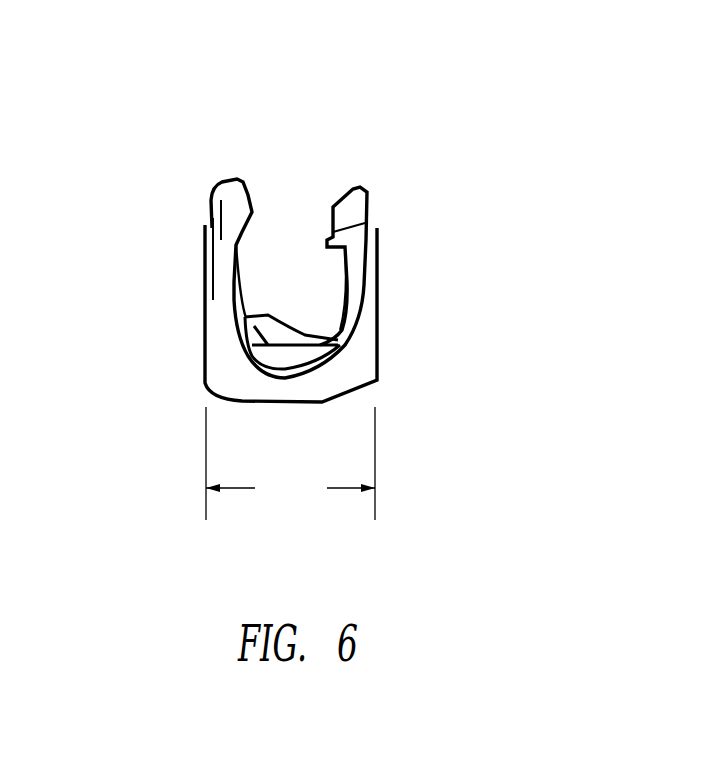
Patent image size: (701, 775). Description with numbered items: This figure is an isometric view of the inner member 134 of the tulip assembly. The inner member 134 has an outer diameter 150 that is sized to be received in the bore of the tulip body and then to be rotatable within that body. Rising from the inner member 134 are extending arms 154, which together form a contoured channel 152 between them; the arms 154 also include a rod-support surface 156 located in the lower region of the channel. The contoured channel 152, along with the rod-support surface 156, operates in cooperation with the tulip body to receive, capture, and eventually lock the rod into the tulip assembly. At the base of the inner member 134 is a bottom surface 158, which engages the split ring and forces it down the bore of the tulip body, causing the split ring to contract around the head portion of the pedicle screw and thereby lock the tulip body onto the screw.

The inner member 134 is at (467, 92).
The contoured channel 152 is at (302, 175).
The extending arms 154 is at (207, 252).
The rod-support surface 156 is at (243, 342).
The bottom surface 158 is at (370, 388).
The outer diameter 150 is at (290, 463).